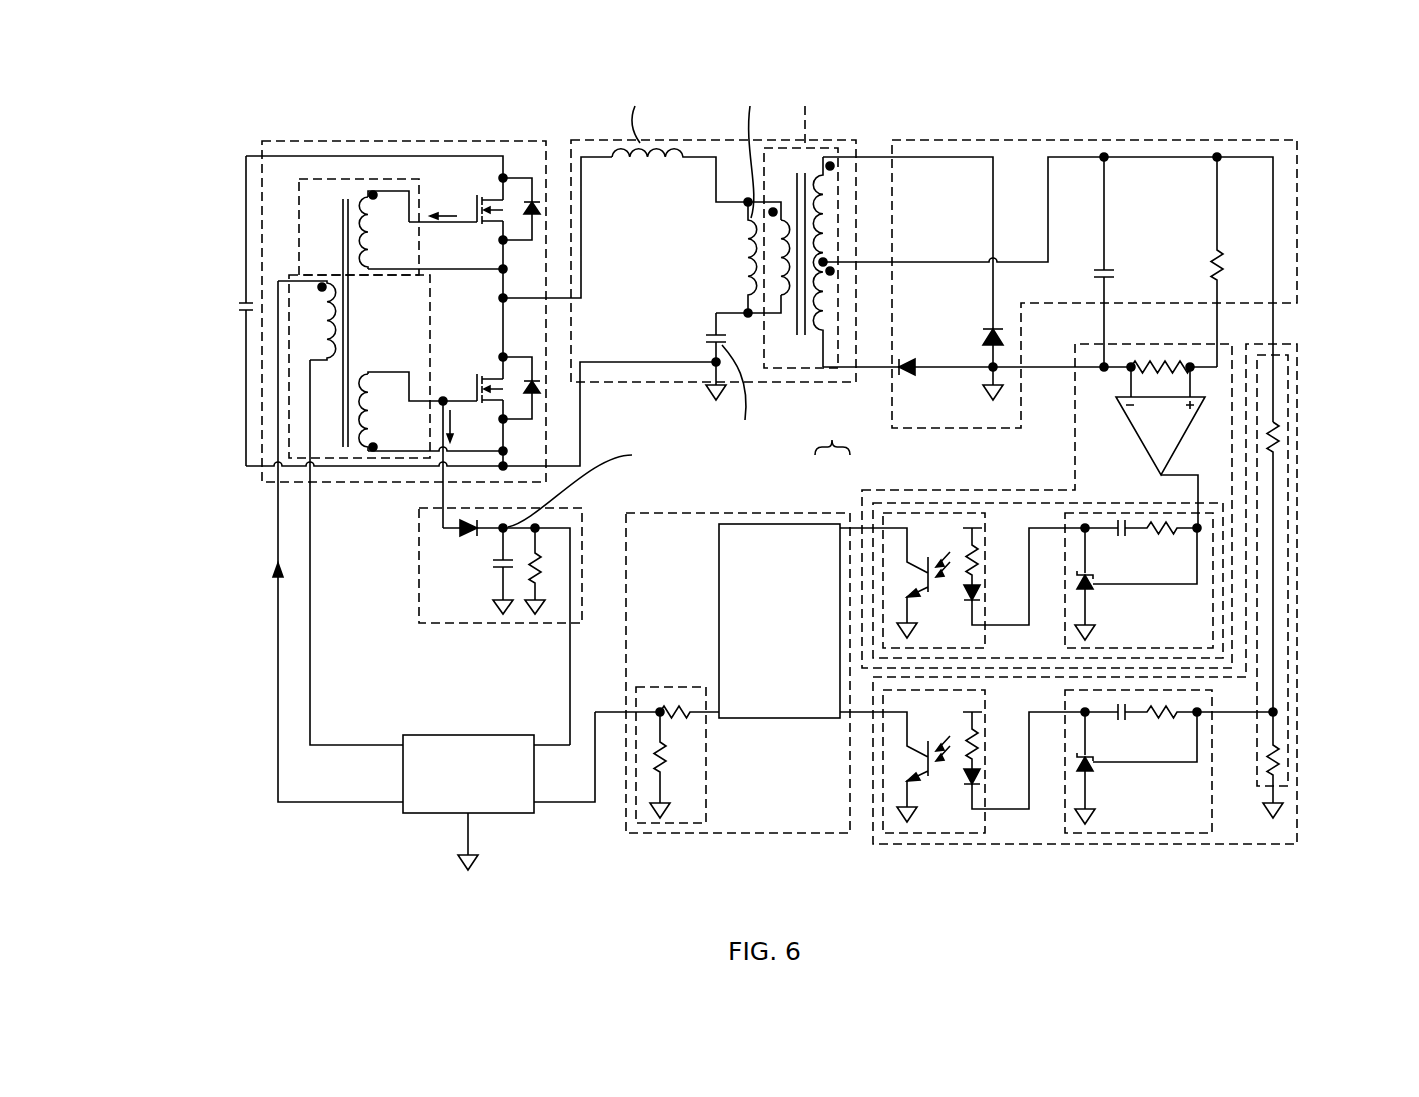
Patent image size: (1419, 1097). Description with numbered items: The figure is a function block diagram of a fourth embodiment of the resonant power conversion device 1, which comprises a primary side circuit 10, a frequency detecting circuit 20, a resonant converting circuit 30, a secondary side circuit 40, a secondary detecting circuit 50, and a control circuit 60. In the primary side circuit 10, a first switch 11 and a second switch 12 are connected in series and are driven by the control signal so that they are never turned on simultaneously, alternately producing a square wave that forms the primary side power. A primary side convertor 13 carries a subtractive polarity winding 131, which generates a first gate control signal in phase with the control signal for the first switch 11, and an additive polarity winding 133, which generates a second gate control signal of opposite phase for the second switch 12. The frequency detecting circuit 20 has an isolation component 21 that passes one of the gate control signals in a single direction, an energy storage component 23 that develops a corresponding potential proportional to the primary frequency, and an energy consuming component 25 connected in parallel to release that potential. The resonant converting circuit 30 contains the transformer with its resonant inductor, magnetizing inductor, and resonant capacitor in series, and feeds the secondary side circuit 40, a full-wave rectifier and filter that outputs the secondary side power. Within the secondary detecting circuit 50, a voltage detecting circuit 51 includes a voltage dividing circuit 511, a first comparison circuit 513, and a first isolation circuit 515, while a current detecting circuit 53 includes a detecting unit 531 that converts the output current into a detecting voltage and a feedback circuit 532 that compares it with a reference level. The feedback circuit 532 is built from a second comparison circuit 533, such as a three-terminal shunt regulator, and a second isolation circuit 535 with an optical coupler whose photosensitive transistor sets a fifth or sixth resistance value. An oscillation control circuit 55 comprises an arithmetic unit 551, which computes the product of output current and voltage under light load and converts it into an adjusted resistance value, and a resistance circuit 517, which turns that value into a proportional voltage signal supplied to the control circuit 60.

The resonant power conversion device 1 is at (1334, 113).
The primary side circuit 10 is at (309, 140).
The first switch 11 is at (483, 195).
The second switch 12 is at (497, 410).
The primary side convertor 13 is at (168, 205).
The subtractive polarity winding 131 is at (298, 232).
The additive polarity winding 133 is at (289, 292).
The frequency detecting circuit 20 is at (418, 608).
The isolation component 21 is at (459, 530).
The energy storage component 23 is at (495, 566).
The energy consuming component 25 is at (538, 553).
The resonant converting circuit 30 is at (585, 140).
The secondary side circuit 40 is at (1125, 140).
The secondary detecting circuit 50 is at (1362, 462).
The voltage detecting circuit 51 is at (1298, 470).
The voltage dividing circuit 511 is at (1288, 690).
The first comparison circuit 513 is at (1160, 844).
The first isolation circuit 515 is at (927, 844).
The resistance circuit 517 is at (647, 824).
The current detecting circuit 53 is at (1232, 525).
The detecting unit 531 is at (1208, 402).
The feedback circuit 532 is at (1223, 622).
The second comparison circuit 533 is at (1213, 572).
The second isolation circuit 535 is at (987, 645).
The oscillation control circuit 55 is at (832, 513).
The arithmetic unit 551 is at (782, 524).
The control circuit 60 is at (422, 815).